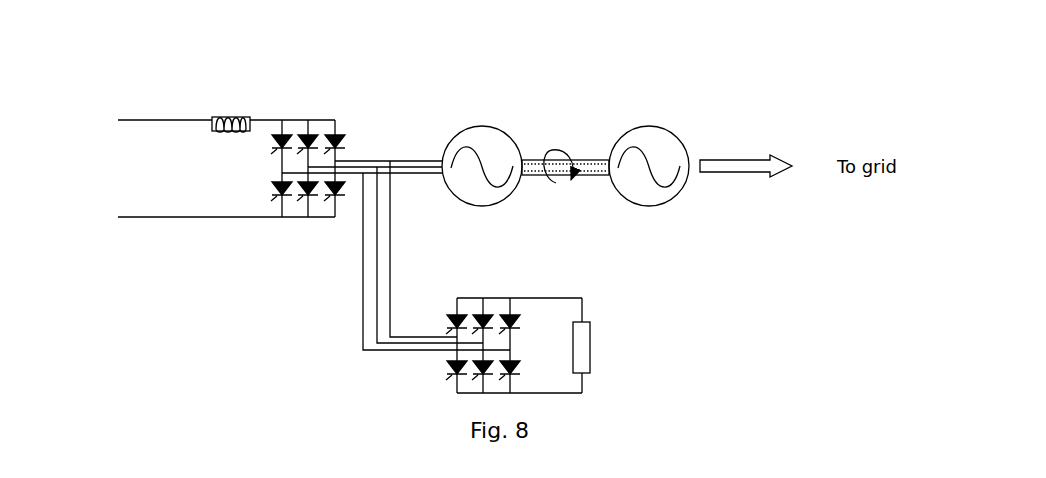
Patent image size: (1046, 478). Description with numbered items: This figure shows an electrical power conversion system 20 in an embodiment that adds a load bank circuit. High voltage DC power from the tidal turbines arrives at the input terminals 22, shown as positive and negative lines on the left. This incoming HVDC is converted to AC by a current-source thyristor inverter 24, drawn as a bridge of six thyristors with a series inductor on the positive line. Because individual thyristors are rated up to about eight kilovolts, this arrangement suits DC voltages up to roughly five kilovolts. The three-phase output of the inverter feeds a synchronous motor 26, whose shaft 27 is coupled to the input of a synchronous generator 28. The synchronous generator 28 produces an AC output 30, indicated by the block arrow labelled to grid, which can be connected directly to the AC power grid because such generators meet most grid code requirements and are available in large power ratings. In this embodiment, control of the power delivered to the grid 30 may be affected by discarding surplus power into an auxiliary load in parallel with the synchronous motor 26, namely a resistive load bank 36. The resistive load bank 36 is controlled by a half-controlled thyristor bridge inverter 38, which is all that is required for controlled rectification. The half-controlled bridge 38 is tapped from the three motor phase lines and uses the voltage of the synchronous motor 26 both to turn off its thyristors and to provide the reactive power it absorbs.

The electrical power conversion system 20 is at (193, 48).
The input terminals 22 is at (128, 233).
The current-source thyristor inverter 24 is at (355, 100).
The synchronous motor 26 is at (465, 202).
The shaft 27 is at (542, 158).
The synchronous generator 28 is at (640, 198).
The AC output 30 is at (760, 143).
The resistive load bank 36 is at (598, 353).
The half-controlled thyristor bridge inverter 38 is at (422, 373).